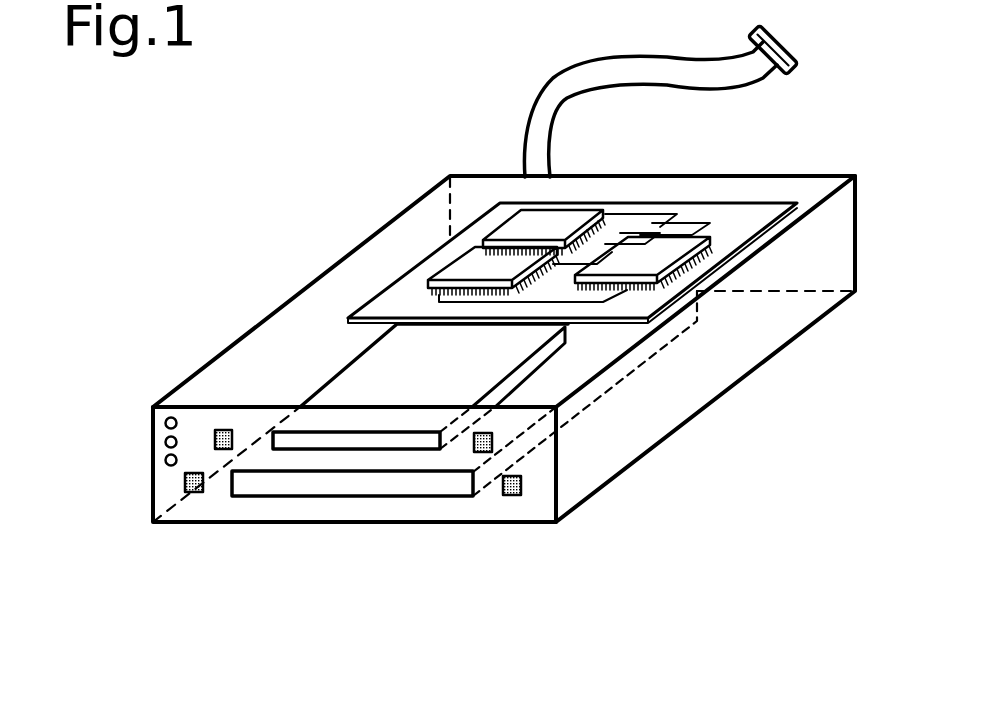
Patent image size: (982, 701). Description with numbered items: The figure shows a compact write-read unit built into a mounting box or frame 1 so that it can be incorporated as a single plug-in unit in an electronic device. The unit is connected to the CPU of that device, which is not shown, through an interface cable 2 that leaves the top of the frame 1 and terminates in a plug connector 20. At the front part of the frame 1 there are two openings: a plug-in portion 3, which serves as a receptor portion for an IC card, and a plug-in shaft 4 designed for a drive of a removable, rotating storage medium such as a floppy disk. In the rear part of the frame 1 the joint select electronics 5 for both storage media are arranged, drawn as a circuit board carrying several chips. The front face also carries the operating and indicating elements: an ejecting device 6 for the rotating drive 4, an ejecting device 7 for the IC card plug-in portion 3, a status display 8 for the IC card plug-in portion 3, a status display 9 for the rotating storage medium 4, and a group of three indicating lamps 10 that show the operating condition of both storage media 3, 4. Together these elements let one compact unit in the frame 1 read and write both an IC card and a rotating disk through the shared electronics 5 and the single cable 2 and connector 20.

The mounting box or frame 1 is at (707, 380).
The interface cable 2 is at (566, 87).
The plug connector 20 is at (795, 73).
The plug-in portion 3 is at (400, 440).
The plug-in shaft 4 is at (275, 485).
The joint select electronics 5 is at (524, 223).
The ejecting device 6 is at (523, 487).
The ejecting device 7 is at (494, 441).
The status display 8 is at (213, 436).
The status display 9 is at (185, 481).
The indicating lamps 10 is at (165, 442).